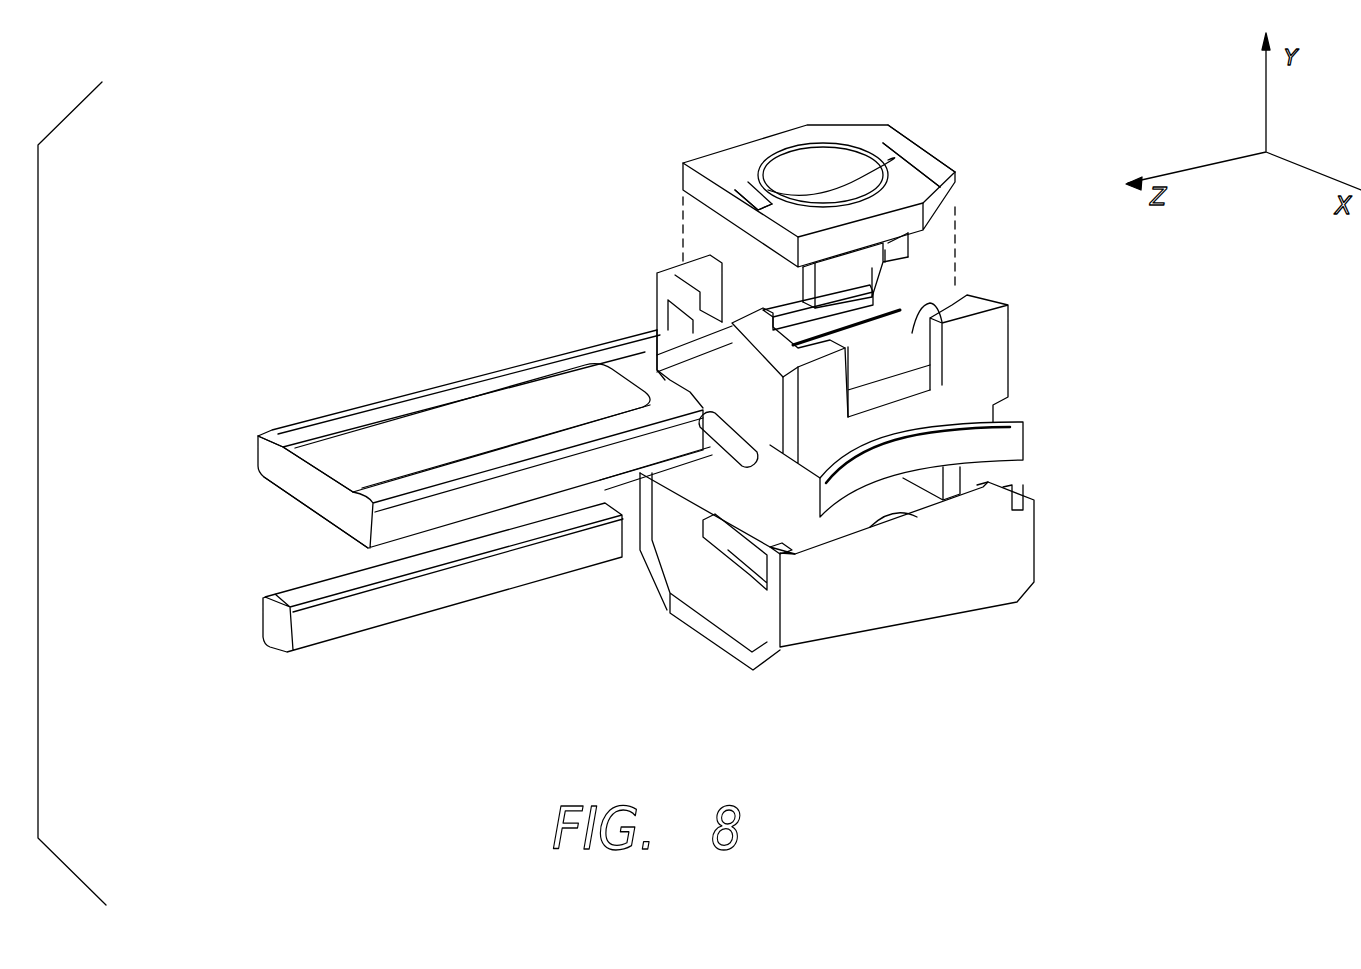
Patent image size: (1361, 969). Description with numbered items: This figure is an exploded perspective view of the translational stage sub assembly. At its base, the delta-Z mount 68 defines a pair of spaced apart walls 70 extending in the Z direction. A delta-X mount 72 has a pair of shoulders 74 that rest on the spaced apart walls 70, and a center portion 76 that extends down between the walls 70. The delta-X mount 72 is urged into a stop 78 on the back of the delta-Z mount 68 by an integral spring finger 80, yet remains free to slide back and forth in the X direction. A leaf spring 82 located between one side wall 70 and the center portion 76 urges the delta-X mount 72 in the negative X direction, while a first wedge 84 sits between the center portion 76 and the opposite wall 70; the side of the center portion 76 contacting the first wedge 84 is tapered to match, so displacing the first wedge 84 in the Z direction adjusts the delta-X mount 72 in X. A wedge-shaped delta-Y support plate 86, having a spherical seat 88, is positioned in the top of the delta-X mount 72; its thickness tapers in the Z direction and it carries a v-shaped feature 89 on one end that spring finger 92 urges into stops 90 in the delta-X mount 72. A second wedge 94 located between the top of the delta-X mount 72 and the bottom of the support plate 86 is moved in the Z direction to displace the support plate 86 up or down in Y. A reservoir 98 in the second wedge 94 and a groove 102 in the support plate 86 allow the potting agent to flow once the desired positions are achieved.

The delta-Z mount 68 is at (1035, 548).
The spaced apart walls 70 is at (913, 523).
The delta-X mount 72 is at (1010, 352).
The shoulders 74 is at (642, 355).
The center portion 76 is at (773, 445).
The stop 78 is at (952, 483).
The spring finger 80 is at (745, 472).
The leaf spring 82 is at (1027, 428).
The first wedge 84 is at (277, 628).
The delta-Y support plate 86 is at (953, 165).
The spherical seat 88 is at (802, 177).
The v-shaped feature 89 is at (860, 127).
The stops 90 is at (893, 258).
The spring finger 92 is at (657, 328).
The second wedge 94 is at (255, 462).
The reservoir 98 is at (520, 403).
The groove 102 is at (752, 198).